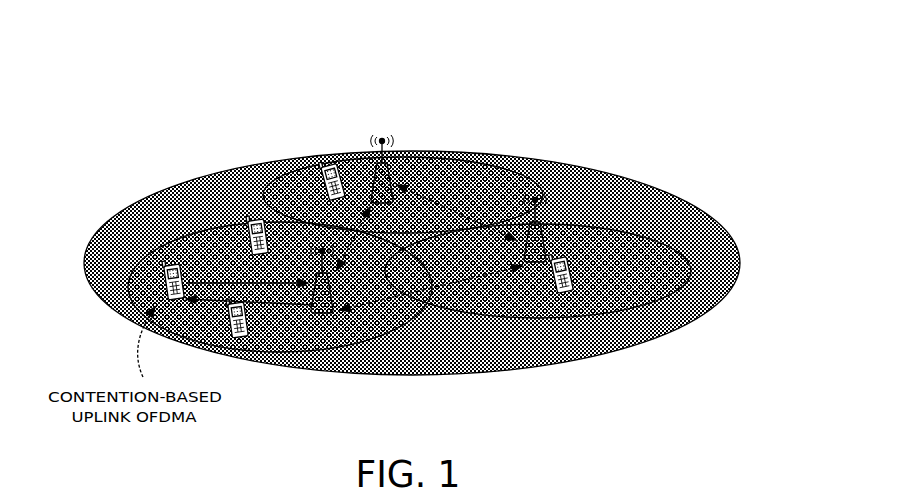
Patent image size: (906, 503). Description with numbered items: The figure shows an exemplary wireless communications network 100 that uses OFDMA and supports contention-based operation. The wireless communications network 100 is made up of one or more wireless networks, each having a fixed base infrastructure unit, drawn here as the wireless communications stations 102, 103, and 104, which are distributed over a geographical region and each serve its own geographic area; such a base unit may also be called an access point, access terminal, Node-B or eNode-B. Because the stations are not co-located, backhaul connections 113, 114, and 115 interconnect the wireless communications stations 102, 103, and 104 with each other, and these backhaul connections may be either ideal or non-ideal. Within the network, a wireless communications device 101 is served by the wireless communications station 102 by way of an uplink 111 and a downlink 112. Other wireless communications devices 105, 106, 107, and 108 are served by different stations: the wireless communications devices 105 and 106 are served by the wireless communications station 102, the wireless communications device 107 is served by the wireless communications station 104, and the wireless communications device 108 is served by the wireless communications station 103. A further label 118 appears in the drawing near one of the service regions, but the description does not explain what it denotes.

The wireless communications network 100 is at (655, 110).
The wireless communications device 101 is at (168, 262).
The wireless communications station 102 is at (318, 247).
The wireless communications station 103 is at (383, 135).
The wireless communications station 104 is at (535, 193).
The wireless communications device 105 is at (229, 335).
The wireless communications device 106 is at (258, 215).
The wireless communications device 107 is at (566, 262).
The wireless communications device 108 is at (330, 160).
The uplink 111 is at (256, 283).
The downlink 112 is at (269, 305).
The backhaul connection 113 is at (366, 249).
The backhaul connection 114 is at (460, 290).
The backhaul connection 115 is at (458, 214).
The coverage area 118 is at (453, 249).